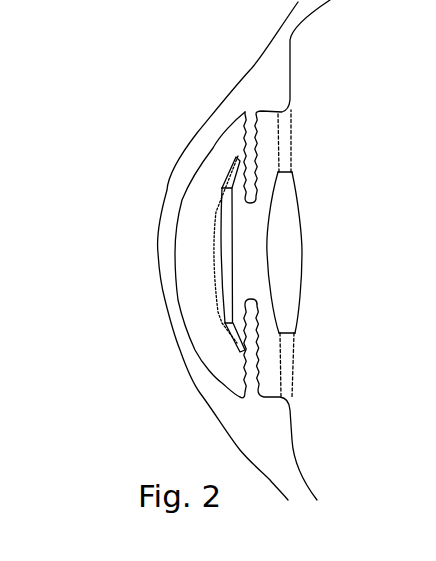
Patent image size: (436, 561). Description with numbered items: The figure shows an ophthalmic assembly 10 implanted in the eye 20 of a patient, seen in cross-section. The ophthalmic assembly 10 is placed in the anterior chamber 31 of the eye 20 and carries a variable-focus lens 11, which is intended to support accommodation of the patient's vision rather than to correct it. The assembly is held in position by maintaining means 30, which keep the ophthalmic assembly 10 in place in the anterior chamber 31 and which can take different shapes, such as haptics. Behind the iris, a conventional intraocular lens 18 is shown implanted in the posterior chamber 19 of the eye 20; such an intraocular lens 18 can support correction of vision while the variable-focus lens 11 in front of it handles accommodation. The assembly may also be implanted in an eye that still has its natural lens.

The eye 20 is at (187, 118).
The intraocular lens 18 is at (290, 195).
The posterior chamber 19 is at (275, 375).
The ophthalmic assembly 10 is at (217, 290).
The variable-focus lens 11 is at (217, 219).
The maintaining means 30 is at (232, 338).
The anterior chamber 31 is at (188, 237).